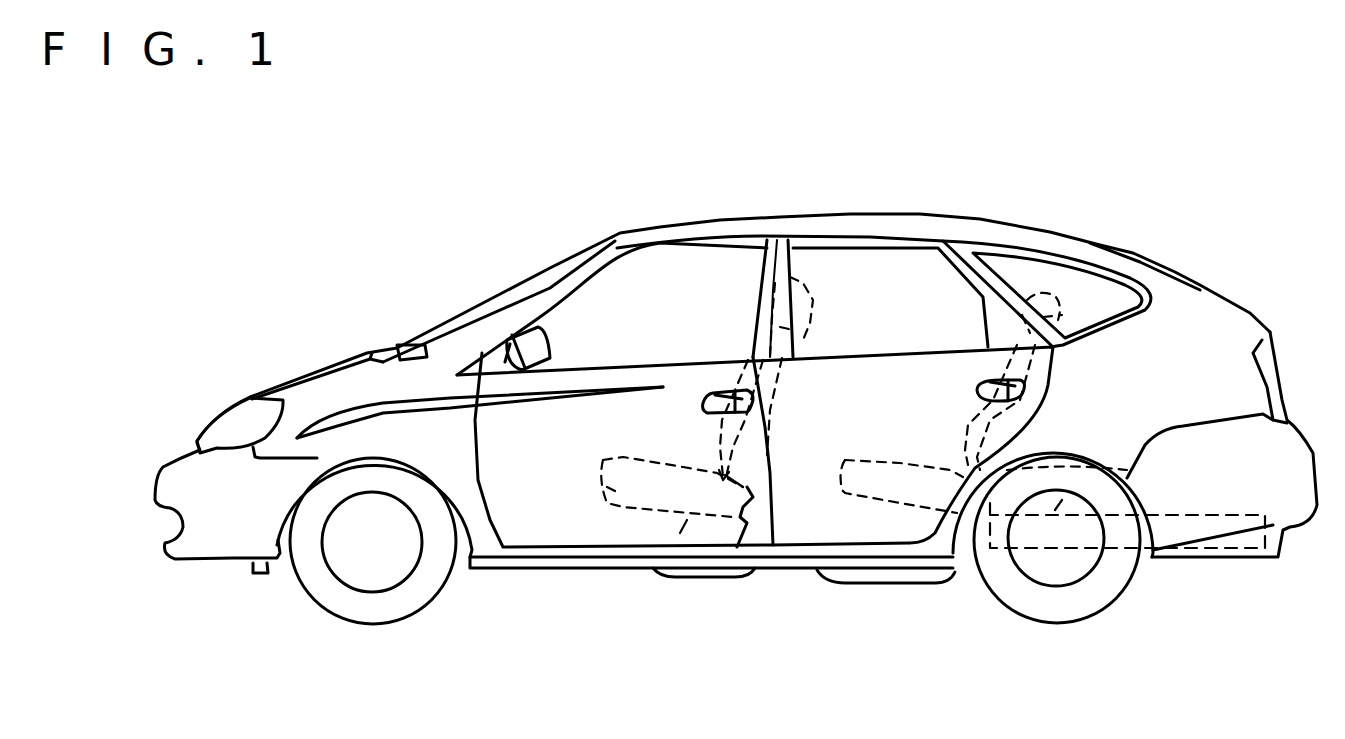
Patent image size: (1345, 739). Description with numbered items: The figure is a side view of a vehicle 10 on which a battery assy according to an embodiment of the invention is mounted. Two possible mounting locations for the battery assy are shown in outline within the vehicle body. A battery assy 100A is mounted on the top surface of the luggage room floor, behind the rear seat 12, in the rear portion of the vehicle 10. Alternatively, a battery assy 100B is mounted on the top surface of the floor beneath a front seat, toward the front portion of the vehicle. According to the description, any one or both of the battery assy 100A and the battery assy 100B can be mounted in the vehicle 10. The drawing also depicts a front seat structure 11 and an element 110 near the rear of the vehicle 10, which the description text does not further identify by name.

The vehicle 10 is at (815, 186).
The front seat side airbag device 11 is at (607, 490).
The rear seat 12 is at (900, 487).
The battery assy 100A is at (1060, 505).
The battery assy 100B is at (687, 517).
The airbag control unit 110 is at (1193, 533).